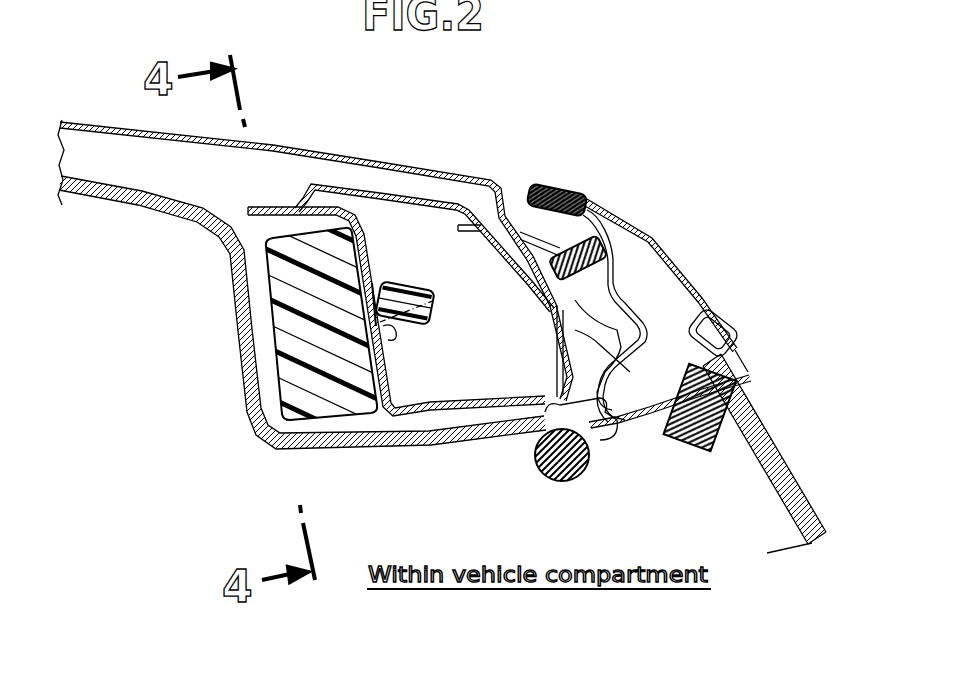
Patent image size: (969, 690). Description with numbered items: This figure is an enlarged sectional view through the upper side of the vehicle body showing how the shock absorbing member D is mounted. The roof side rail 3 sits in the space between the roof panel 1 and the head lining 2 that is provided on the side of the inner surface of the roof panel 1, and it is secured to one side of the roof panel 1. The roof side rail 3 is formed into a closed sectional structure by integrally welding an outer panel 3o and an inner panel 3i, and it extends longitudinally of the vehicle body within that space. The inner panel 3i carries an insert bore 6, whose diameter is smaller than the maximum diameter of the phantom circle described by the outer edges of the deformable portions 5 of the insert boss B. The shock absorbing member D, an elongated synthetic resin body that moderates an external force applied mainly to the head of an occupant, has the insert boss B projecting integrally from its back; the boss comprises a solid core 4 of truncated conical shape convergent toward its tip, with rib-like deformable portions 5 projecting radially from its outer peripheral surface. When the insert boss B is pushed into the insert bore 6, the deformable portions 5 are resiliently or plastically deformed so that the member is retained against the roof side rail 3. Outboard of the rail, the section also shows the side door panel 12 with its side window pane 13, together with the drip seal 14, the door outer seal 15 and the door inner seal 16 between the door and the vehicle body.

The roof panel 1 is at (273, 146).
The head lining 2 is at (244, 362).
The roof side rail 3 is at (401, 251).
The outer panel 3o is at (366, 240).
The inner panel 3i is at (374, 250).
The core 4 is at (425, 335).
The deformable portion 5 is at (424, 292).
The insert bore 6 is at (390, 335).
The side door panel 12 is at (685, 246).
The side window pane 13 is at (782, 462).
The drip seal 14 is at (588, 203).
The door outer seal 15 is at (622, 282).
The door inner seal 16 is at (580, 478).
The insert boss B is at (402, 290).
The shock absorbing member D is at (345, 428).